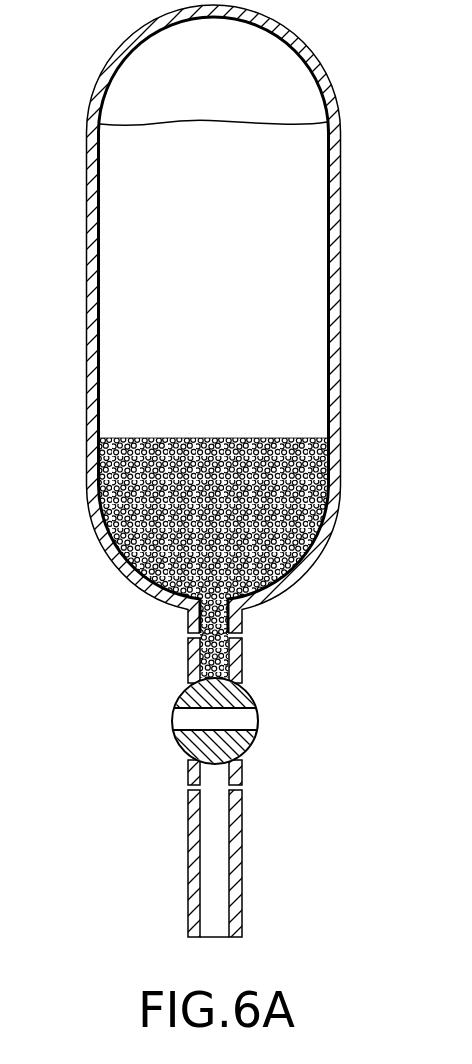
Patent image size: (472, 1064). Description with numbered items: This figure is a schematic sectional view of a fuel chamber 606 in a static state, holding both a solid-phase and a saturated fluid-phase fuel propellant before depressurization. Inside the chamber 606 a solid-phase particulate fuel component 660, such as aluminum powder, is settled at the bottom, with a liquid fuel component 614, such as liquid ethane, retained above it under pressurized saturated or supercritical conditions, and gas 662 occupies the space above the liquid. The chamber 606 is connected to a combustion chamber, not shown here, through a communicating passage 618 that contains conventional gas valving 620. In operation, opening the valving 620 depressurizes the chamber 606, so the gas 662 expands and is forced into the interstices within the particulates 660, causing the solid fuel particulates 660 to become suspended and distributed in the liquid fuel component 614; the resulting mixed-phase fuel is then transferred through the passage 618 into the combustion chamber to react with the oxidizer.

The fuel chamber 606 is at (125, 48).
The gas 662 is at (113, 104).
The liquid fuel component 614 is at (117, 217).
The solid-phase particulate fuel component 660 is at (103, 442).
The communicating passage 618 is at (200, 655).
The gas valving 620 is at (182, 742).